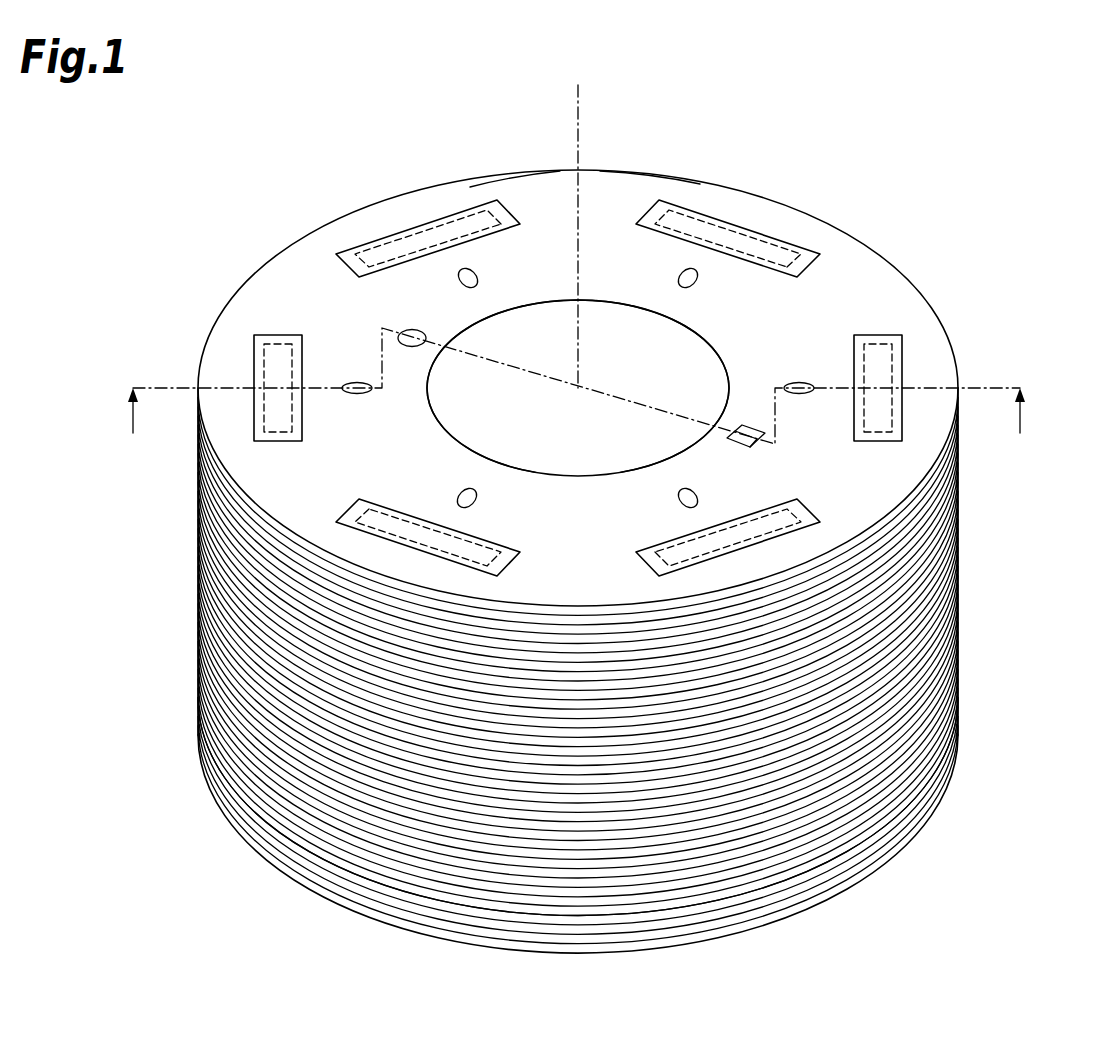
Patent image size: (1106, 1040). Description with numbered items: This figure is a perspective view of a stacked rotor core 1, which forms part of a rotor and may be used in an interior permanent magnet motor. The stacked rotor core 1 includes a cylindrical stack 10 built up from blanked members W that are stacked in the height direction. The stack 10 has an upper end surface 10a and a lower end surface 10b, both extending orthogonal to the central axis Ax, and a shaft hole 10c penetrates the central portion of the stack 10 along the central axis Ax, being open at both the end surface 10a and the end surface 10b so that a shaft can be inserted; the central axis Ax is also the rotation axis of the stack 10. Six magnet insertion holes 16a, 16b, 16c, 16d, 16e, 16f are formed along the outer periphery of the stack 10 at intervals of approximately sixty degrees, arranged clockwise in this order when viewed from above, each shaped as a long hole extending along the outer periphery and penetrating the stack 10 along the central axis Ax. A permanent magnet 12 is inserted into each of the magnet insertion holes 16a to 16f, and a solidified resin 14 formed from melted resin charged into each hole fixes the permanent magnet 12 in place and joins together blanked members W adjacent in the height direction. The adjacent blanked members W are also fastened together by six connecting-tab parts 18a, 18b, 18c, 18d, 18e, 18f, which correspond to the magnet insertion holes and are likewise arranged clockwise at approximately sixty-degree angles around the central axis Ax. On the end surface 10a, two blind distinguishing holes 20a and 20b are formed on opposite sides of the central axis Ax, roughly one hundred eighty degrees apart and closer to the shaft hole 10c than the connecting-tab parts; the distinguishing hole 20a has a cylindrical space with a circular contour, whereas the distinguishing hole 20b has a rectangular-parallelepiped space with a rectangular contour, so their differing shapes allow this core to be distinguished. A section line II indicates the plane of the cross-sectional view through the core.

The stacked rotor core 1 is at (986, 166).
The stack 10 is at (1005, 701).
The end surface 10a is at (230, 348).
The end surface 10b is at (362, 915).
The shaft hole 10c is at (684, 355).
The permanent magnet 12 is at (737, 212).
The solidified resin 14 is at (506, 206).
The magnet insertion hole 16a is at (476, 206).
The magnet insertion hole 16b is at (674, 204).
The magnet insertion hole 16c is at (905, 360).
The magnet insertion hole 16d is at (785, 545).
The magnet insertion hole 16e is at (342, 528).
The magnet insertion hole 16f is at (272, 333).
The connecting-tab part 18a is at (460, 271).
The connecting-tab part 18b is at (699, 277).
The connecting-tab part 18c is at (802, 382).
The connecting-tab part 18d is at (700, 497).
The connecting-tab part 18e is at (455, 496).
The connecting-tab part 18f is at (353, 381).
The distinguishing hole 20a is at (410, 329).
The distinguishing hole 20b is at (768, 446).
The blanked member W is at (272, 862).
The central axis Ax is at (582, 118).
The section line II- II is at (578, 398).